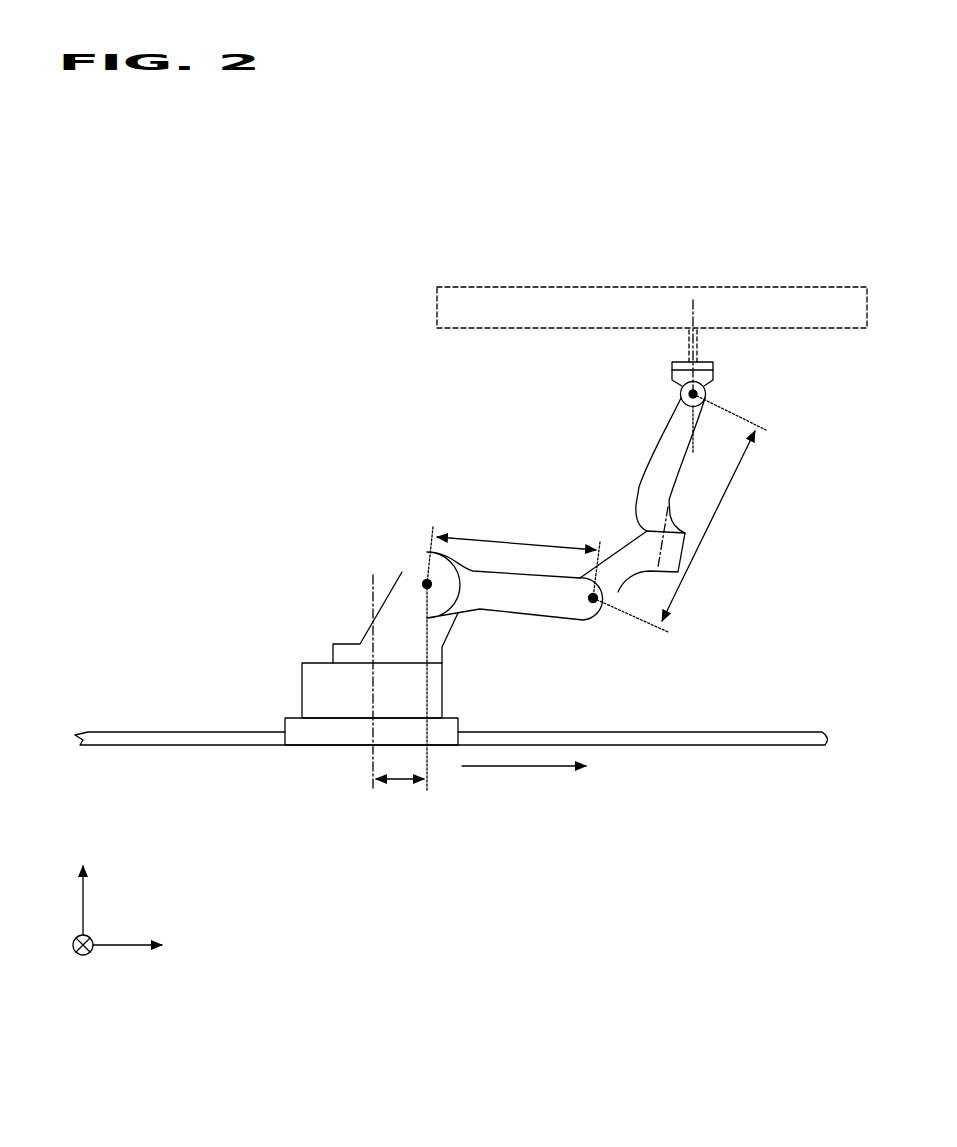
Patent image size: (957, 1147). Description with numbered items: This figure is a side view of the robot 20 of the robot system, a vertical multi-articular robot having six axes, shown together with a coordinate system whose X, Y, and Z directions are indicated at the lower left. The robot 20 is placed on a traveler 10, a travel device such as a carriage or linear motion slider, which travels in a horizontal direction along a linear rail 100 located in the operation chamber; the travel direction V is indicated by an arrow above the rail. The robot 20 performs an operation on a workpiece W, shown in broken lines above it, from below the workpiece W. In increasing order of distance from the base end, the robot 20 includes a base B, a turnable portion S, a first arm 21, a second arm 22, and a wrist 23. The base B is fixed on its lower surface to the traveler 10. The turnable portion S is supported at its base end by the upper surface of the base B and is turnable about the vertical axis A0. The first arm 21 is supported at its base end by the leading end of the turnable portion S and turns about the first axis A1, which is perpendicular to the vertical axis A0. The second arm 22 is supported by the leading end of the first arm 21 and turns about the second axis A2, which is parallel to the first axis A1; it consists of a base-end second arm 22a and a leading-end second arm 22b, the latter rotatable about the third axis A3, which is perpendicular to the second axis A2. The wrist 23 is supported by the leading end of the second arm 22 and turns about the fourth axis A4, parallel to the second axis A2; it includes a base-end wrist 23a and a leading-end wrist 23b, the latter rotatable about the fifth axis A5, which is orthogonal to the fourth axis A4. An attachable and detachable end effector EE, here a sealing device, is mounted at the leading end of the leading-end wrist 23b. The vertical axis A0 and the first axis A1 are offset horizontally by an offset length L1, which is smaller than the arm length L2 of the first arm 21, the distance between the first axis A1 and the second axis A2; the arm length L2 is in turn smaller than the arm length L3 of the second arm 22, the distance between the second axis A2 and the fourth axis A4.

The linear rail 100 is at (112, 738).
The traveler 10 is at (297, 727).
The robot 20 is at (484, 462).
The first arm 21 is at (520, 605).
The second arm 22 is at (614, 487).
The base-end second arm 22a is at (647, 545).
The leading-end second arm 22b is at (657, 468).
The wrist 23 is at (762, 373).
The base-end wrist 23a is at (706, 380).
The leading-end wrist 23b is at (706, 368).
The base B is at (437, 692).
The turnable portion S is at (443, 623).
The end effector EE is at (686, 348).
The workpiece W is at (608, 295).
The vertical axis A0 is at (370, 597).
The first axis A1 is at (426, 578).
The second axis A2 is at (593, 603).
The third axis A3 is at (680, 520).
The fourth axis A4 is at (689, 393).
The fifth axis A5 is at (700, 313).
The offset length L1 is at (400, 797).
The arm length of the first arm L2 is at (513, 557).
The arm length of the second arm L3 is at (679, 513).
The travel direction V is at (517, 767).
The X axis X is at (135, 960).
The Y axis Y is at (73, 955).
The Z axis Z is at (71, 891).